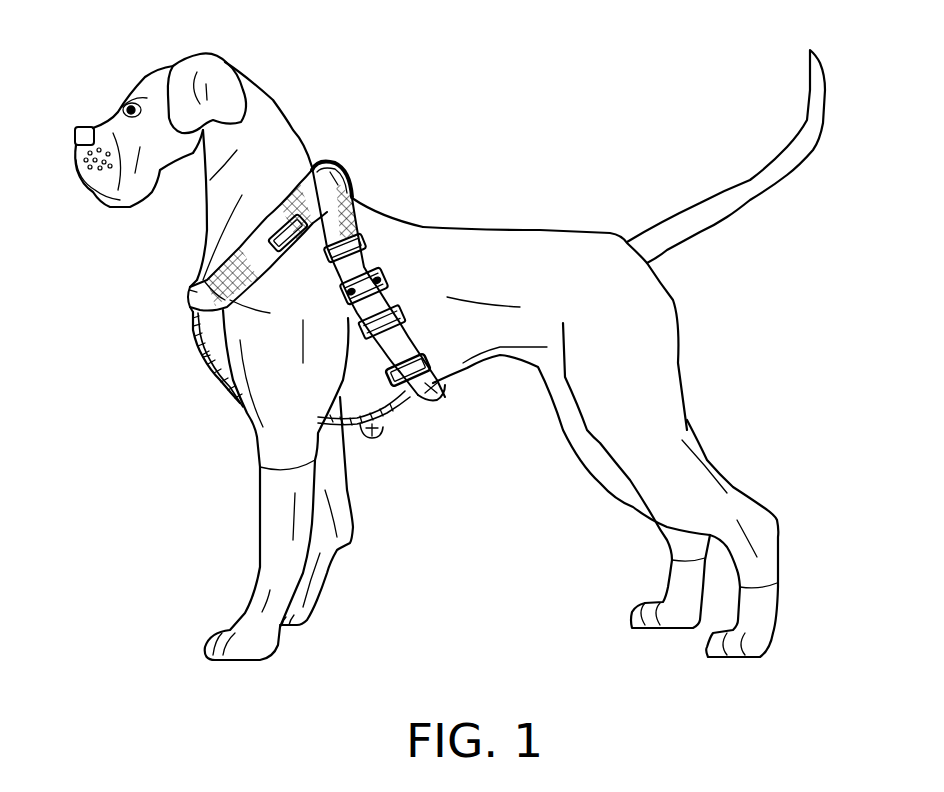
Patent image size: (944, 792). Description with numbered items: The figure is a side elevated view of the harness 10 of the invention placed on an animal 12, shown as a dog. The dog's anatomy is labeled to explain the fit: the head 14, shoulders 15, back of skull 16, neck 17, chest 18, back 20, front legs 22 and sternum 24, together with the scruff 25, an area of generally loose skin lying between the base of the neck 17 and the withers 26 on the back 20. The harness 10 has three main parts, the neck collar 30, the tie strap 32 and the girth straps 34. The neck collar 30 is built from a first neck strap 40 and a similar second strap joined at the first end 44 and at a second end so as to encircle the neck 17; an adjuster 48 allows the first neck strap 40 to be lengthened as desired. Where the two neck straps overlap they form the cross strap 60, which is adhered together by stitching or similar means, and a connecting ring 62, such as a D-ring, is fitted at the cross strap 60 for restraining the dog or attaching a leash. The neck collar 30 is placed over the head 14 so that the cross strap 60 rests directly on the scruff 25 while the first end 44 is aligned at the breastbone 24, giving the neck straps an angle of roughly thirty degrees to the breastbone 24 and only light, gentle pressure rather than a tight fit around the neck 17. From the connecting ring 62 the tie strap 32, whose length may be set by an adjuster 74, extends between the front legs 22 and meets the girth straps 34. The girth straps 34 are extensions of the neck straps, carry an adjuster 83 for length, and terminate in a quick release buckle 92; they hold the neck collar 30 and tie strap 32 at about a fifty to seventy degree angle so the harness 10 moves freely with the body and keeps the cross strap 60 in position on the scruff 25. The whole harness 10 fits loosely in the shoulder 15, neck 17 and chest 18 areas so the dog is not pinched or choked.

The harness 10 is at (177, 313).
The animal 12 is at (100, 68).
The head 14 is at (150, 68).
The shoulders 15 is at (220, 283).
The back of skull 16 is at (258, 88).
The neck 17 is at (297, 128).
The chest 18 is at (393, 397).
The back 20 is at (519, 230).
The front legs 22 is at (270, 568).
The sternum 24 is at (213, 330).
The scruff 25 is at (347, 168).
The withers 26 is at (357, 203).
The neck collar 30 is at (253, 257).
The tie strap 32 is at (203, 363).
The girth straps 34 is at (423, 353).
The first neck strap 40 is at (233, 268).
The first end 44 is at (190, 297).
The adjuster 48 is at (283, 210).
The cross strap 60 is at (330, 163).
The connecting ring 62 is at (312, 167).
The adjuster 74 is at (367, 433).
The adjuster 83 is at (365, 238).
The quick release buckle 92 is at (400, 273).